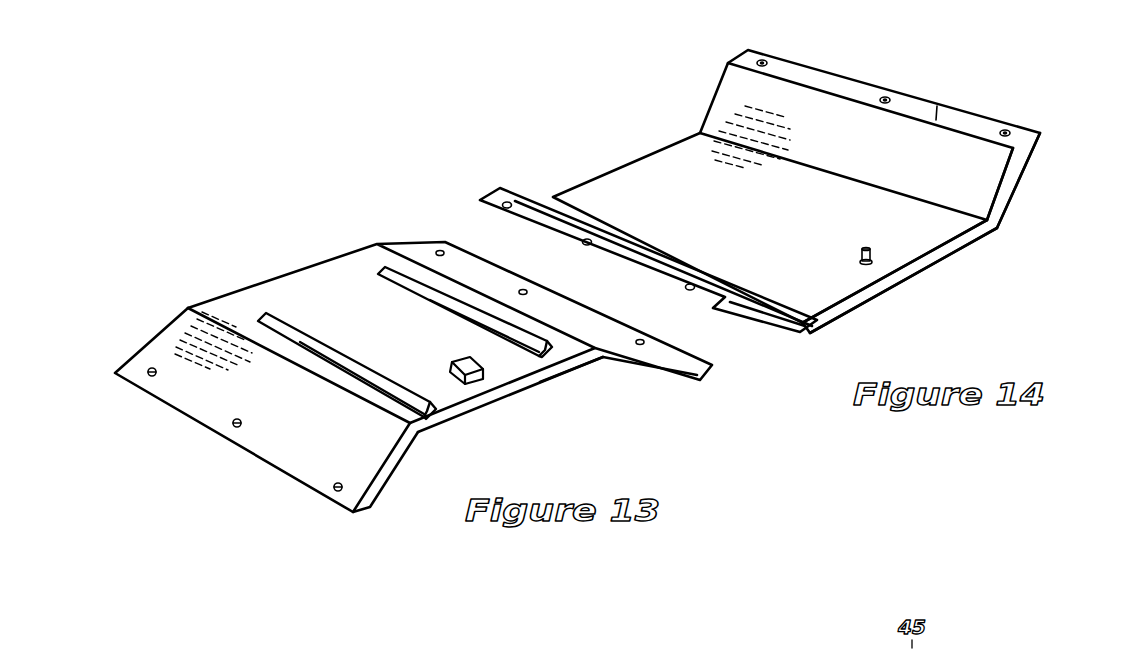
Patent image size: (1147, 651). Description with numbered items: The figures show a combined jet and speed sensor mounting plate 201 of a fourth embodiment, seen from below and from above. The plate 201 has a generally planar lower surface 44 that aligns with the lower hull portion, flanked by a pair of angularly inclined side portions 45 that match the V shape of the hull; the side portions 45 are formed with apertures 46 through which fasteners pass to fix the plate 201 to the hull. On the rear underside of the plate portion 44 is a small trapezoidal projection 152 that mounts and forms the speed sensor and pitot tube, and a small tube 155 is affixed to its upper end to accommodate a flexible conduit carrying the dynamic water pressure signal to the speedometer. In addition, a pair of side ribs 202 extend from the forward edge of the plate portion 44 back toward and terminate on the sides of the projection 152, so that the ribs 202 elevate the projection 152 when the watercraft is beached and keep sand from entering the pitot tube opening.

In FIG. 13, the lower surface 44 is at (319, 273).
In FIG. 14, the lower surface 44 is at (650, 170).
In FIG. 13, the side portions 45 is at (644, 247).
In FIG. 14, the side portions 45 is at (988, 172).
In FIG. 13, the apertures 46 is at (583, 242).
In FIG. 14, the apertures 46 is at (767, 64).
In FIG. 13, the projection 152 is at (477, 384).
In FIG. 14, the tube 155 is at (872, 257).
In FIG. 13, the combined jet and speed sensor mounting plate 201 is at (288, 452).
In FIG. 14, the combined jet and speed sensor mounting plate 201 is at (960, 256).
In FIG. 13, the side ribs 202 is at (467, 313).